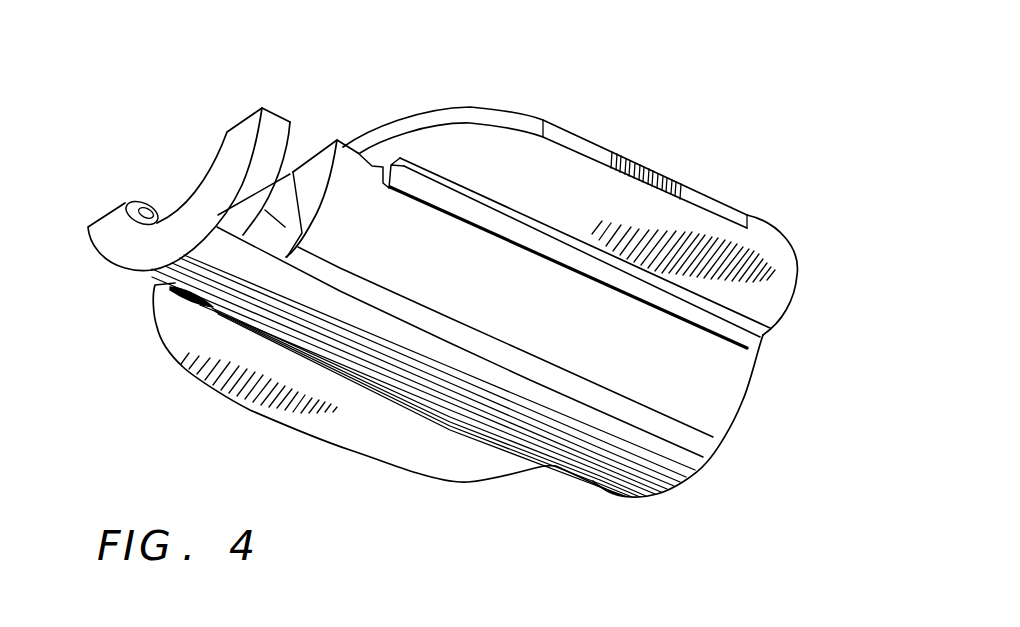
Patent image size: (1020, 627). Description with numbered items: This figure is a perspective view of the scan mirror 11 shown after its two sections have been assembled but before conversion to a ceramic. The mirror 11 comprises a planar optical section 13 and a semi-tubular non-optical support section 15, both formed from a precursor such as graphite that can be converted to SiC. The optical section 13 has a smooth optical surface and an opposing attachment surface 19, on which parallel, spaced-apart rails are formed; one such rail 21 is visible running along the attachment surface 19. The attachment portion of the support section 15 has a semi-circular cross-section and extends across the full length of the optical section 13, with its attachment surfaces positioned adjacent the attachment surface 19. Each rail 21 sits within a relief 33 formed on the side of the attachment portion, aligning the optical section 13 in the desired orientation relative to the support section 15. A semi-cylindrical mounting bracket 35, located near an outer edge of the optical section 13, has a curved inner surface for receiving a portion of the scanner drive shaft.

The mirror 11 is at (727, 65).
The optical section 13 is at (465, 108).
The non-optical support section 15 is at (712, 457).
The attachment surface 19 is at (465, 462).
The rail 21 is at (767, 338).
The relief 33 is at (492, 236).
The mounting bracket 35 is at (120, 244).